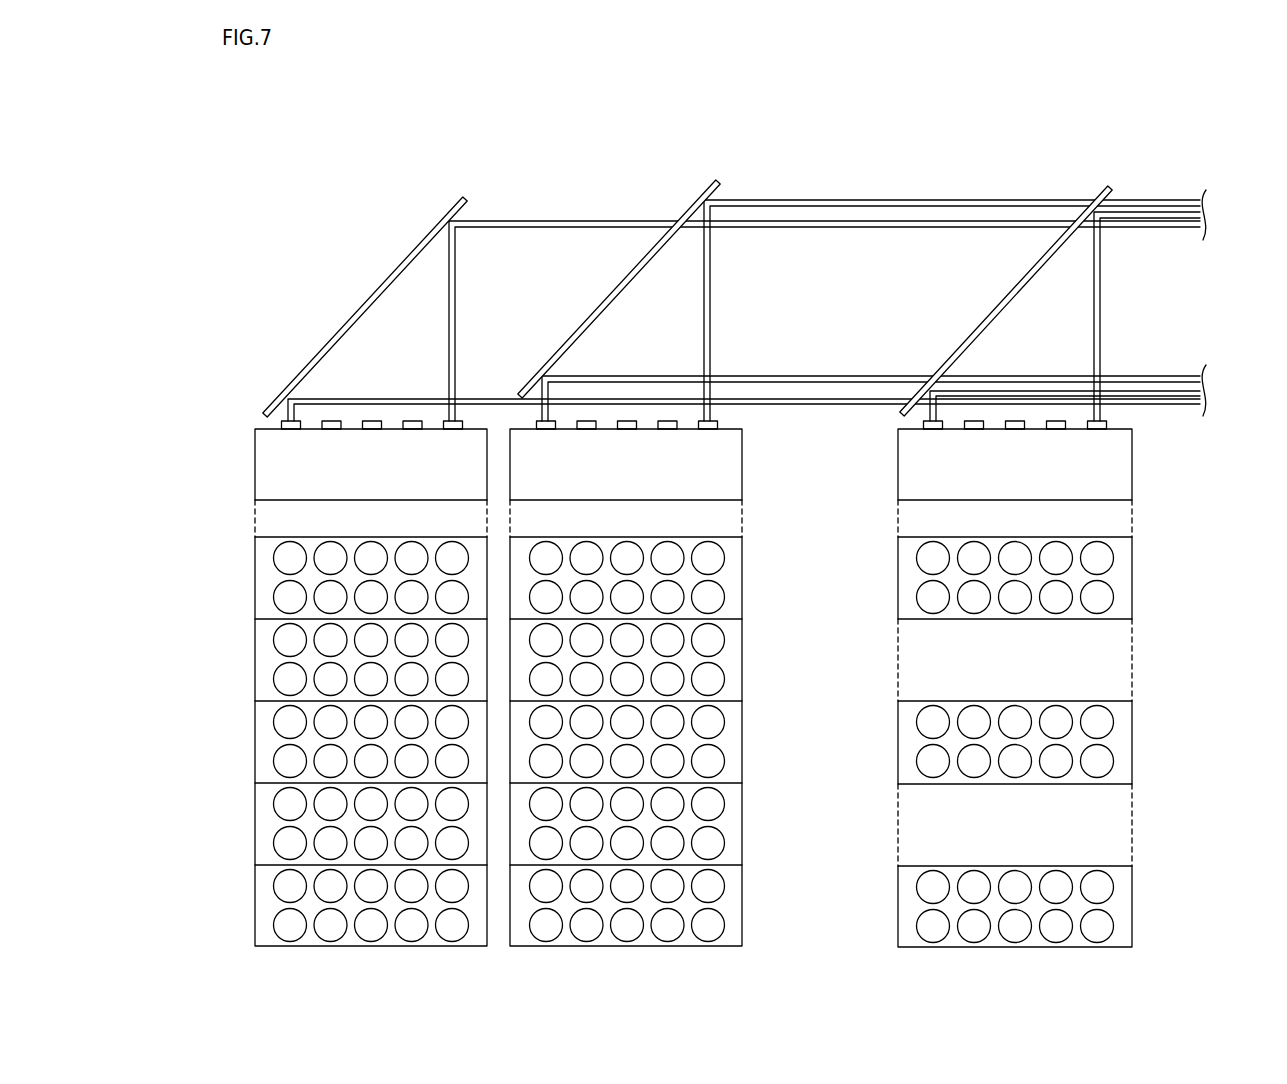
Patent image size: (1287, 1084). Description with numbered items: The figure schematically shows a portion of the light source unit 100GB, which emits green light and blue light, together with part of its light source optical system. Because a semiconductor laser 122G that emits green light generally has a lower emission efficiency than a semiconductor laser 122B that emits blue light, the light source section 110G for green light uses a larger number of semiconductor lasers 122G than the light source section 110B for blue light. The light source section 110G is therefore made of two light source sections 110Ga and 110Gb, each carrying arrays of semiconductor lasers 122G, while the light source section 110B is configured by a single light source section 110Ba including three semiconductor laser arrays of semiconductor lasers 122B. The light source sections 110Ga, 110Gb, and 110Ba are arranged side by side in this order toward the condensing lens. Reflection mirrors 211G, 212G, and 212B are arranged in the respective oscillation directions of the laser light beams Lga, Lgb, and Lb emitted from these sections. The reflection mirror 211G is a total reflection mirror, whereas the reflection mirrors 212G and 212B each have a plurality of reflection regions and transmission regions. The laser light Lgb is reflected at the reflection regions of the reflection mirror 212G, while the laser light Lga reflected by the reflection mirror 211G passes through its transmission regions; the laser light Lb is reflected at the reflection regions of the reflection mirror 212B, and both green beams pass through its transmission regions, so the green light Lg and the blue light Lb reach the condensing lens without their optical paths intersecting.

The light source unit 100GB is at (1165, 120).
The light source section 110G is at (533, 170).
The light source section 110B is at (947, 170).
The light source section 110Ga is at (258, 465).
The light source section 110Gb is at (745, 465).
The light source section 110Ba is at (1135, 465).
The reflection mirror 211G is at (456, 205).
The reflection mirror 212G is at (707, 184).
The reflection mirror 212B is at (1100, 187).
The semiconductor laser 122G is at (453, 420).
The semiconductor laser 122B is at (1103, 425).
The green light Lg is at (563, 219).
The laser light Lb is at (1152, 219).
The laser light Lga is at (368, 397).
The laser light Lgb is at (623, 376).